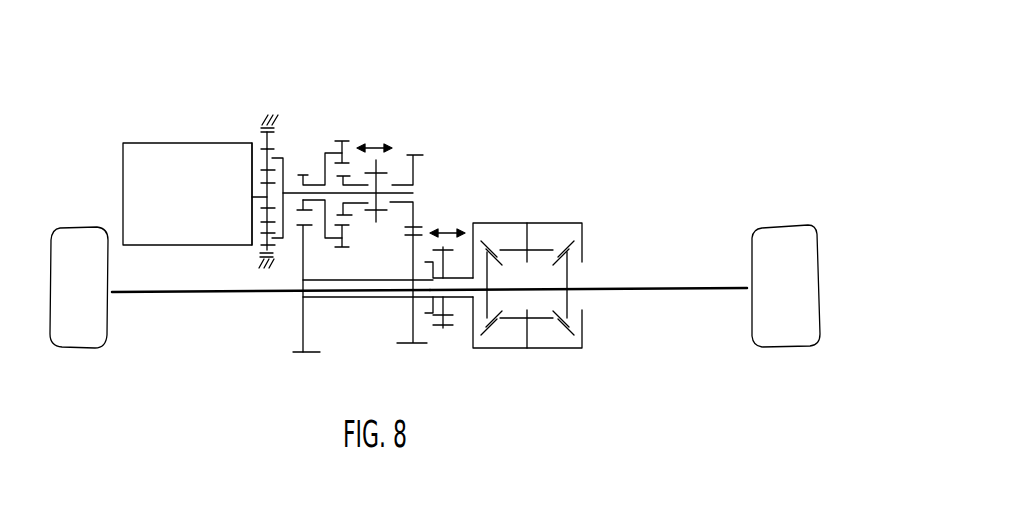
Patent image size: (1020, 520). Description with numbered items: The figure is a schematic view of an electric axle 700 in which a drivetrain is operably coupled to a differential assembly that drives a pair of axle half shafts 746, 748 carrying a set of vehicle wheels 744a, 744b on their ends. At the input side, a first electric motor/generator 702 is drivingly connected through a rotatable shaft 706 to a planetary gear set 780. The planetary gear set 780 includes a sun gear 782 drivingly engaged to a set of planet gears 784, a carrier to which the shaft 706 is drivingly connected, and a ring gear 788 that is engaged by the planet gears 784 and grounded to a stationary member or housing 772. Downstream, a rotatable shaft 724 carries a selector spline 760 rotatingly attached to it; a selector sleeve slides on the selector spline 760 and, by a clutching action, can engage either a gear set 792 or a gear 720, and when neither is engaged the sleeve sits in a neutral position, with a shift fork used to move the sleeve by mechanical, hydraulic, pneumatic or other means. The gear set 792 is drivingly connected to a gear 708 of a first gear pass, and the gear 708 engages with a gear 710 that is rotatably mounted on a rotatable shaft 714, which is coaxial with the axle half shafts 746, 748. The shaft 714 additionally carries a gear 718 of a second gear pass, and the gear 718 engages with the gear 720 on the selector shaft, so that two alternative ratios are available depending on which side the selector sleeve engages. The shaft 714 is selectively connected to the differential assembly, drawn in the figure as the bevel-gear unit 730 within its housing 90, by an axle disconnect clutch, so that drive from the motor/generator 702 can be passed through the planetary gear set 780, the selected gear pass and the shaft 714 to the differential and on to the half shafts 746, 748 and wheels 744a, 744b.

The electric axle 700 is at (657, 142).
The first electric motor/generator 702 is at (195, 194).
The rotatable shaft 706 is at (281, 238).
The gear 708 is at (302, 174).
The gear 710 is at (310, 354).
The rotatable shaft 714 is at (353, 298).
The gear 718 is at (415, 343).
The gear 720 is at (412, 155).
The rotatable shaft 724 is at (412, 193).
The differential 730 is at (554, 374).
The vehicle wheel 744a is at (93, 343).
The vehicle wheel 744b is at (780, 347).
The axle half shaft 746 is at (260, 295).
The axle half shaft 748 is at (633, 290).
The selector spline 760 is at (378, 167).
The stationary member or housing 772 is at (280, 120).
The planetary gear set 780 is at (272, 88).
The sun gear 782 is at (272, 200).
The planet gears 784 is at (252, 150).
The ring gear 788 is at (264, 118).
The gear set 792 is at (348, 105).
The differential gear set 90 is at (533, 189).